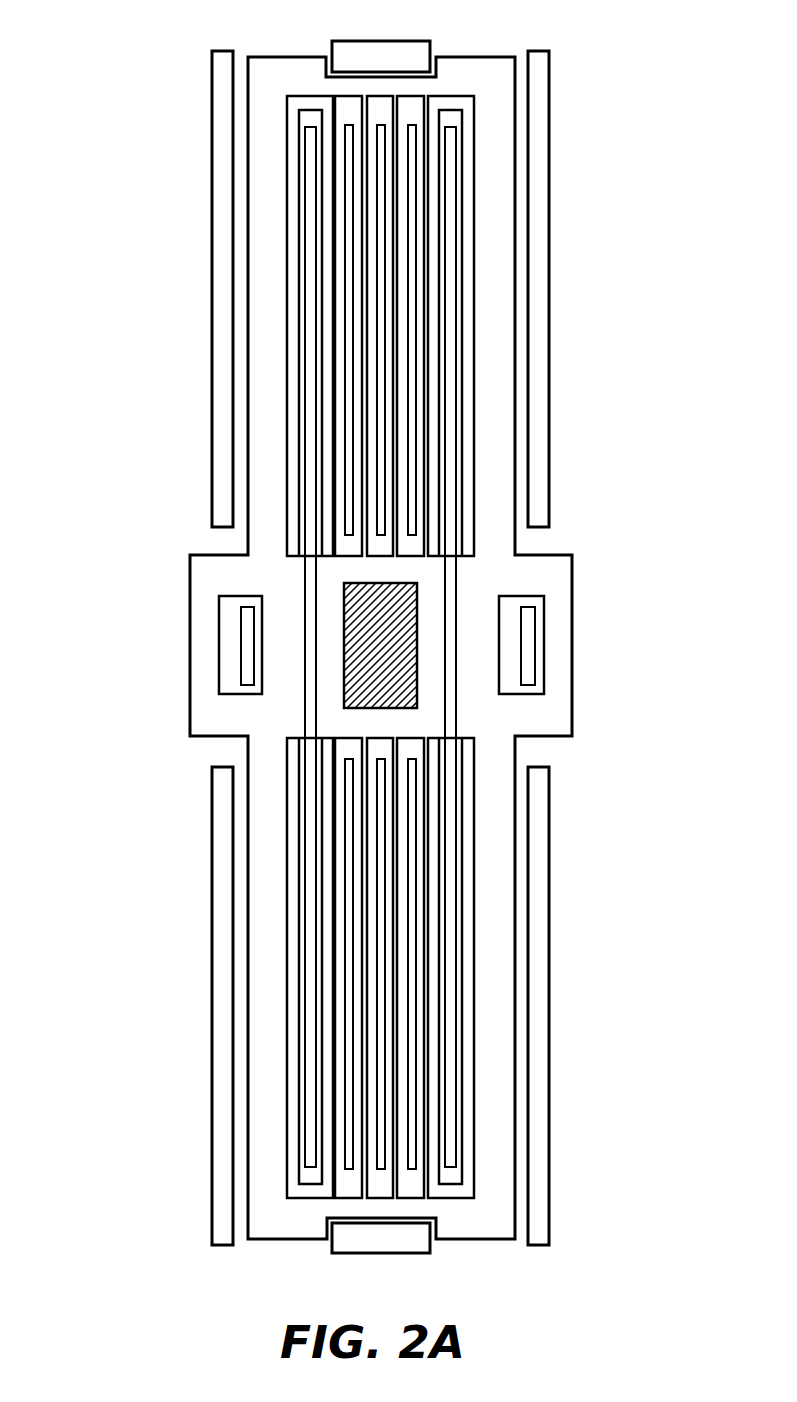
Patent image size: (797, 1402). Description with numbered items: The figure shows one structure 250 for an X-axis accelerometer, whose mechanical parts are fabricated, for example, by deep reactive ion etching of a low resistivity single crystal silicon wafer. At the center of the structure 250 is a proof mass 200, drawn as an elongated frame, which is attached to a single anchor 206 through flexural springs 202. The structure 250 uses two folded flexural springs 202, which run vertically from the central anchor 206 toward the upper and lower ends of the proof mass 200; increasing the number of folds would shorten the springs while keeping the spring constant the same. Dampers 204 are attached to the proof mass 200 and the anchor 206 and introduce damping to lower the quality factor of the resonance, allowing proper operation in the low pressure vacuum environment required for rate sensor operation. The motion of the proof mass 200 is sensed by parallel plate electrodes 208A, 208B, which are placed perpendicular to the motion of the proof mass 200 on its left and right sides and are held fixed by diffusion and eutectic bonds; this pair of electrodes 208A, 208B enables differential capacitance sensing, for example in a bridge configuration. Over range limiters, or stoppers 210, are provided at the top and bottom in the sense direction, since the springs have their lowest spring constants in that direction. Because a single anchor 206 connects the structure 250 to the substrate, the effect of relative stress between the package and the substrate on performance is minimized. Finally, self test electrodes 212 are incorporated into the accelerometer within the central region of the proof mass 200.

The structure for an X-axis accelerometer 250 is at (132, 56).
The proof mass 200 is at (520, 1072).
The flexural springs 202 is at (294, 303).
The dampers 204 is at (392, 981).
The anchor 206 is at (428, 610).
The parallel plate electrode 208A is at (207, 417).
The parallel plate electrode 208B is at (558, 415).
The over range limiter (stopper) 210 is at (448, 72).
The self test electrode 212 is at (233, 663).